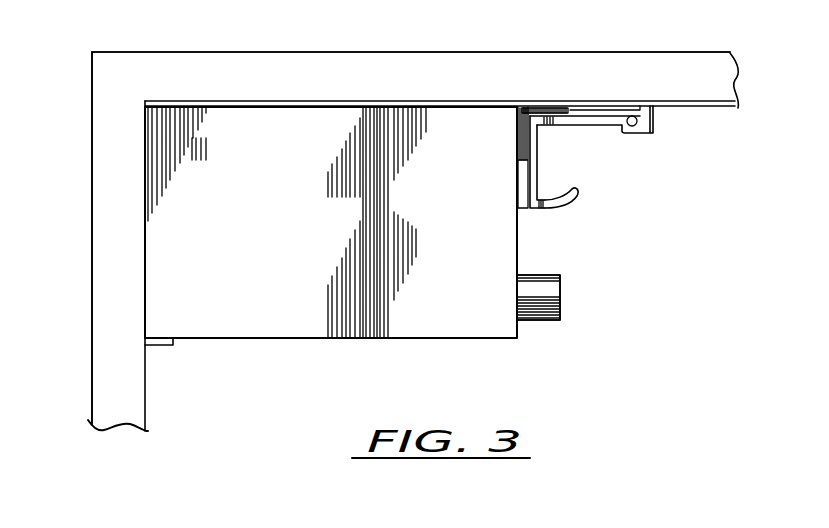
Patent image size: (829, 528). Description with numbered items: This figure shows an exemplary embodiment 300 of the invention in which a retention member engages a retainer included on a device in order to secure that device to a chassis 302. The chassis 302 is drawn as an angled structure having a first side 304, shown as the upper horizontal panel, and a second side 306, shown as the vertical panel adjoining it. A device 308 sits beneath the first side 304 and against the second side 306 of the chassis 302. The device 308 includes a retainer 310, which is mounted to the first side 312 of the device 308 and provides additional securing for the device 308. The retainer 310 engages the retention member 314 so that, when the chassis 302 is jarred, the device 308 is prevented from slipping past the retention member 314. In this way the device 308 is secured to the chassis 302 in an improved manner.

The exemplary embodiment 300 is at (585, 275).
The chassis 302 is at (267, 41).
The first side 304 is at (452, 53).
The second side 306 is at (97, 254).
The device 308 is at (300, 265).
The retainer 310 is at (550, 108).
The first side 312 is at (518, 240).
The retention member 314 is at (538, 150).